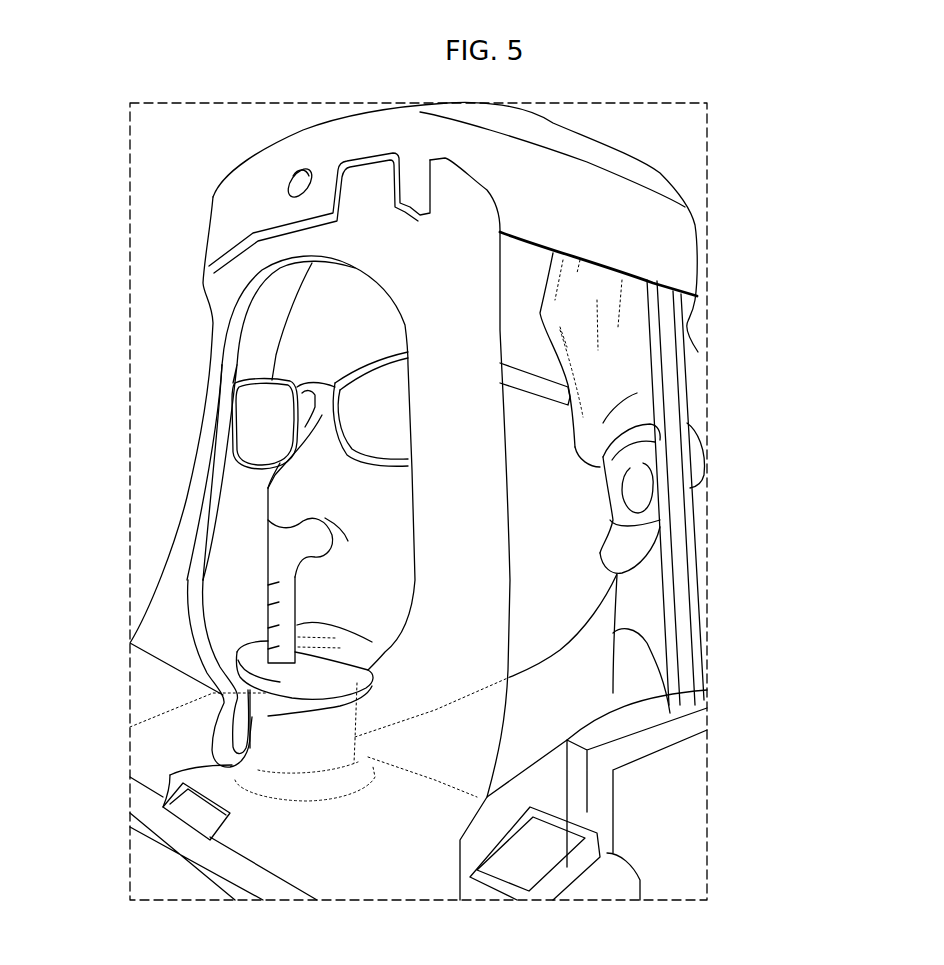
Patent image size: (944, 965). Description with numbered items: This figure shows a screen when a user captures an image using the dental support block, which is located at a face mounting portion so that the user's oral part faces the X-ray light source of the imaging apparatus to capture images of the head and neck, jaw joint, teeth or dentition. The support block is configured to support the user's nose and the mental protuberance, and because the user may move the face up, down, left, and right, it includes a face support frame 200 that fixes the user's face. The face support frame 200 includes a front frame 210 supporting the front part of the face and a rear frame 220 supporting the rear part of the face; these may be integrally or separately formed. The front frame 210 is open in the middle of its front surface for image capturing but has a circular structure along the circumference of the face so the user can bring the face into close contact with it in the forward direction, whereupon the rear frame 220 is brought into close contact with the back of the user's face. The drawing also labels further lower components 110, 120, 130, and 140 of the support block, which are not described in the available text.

The chin rest 110 is at (130, 643).
The base 120 is at (163, 797).
The height adjustment bar 130 is at (270, 580).
The face support 140 is at (277, 487).
The face support frame 200 is at (792, 490).
The front frame 210 is at (477, 627).
The rear frame 220 is at (682, 508).